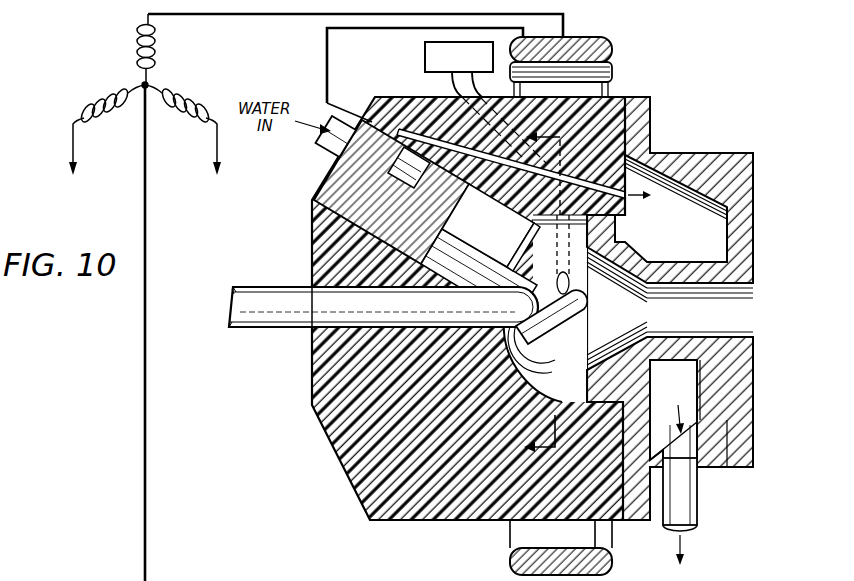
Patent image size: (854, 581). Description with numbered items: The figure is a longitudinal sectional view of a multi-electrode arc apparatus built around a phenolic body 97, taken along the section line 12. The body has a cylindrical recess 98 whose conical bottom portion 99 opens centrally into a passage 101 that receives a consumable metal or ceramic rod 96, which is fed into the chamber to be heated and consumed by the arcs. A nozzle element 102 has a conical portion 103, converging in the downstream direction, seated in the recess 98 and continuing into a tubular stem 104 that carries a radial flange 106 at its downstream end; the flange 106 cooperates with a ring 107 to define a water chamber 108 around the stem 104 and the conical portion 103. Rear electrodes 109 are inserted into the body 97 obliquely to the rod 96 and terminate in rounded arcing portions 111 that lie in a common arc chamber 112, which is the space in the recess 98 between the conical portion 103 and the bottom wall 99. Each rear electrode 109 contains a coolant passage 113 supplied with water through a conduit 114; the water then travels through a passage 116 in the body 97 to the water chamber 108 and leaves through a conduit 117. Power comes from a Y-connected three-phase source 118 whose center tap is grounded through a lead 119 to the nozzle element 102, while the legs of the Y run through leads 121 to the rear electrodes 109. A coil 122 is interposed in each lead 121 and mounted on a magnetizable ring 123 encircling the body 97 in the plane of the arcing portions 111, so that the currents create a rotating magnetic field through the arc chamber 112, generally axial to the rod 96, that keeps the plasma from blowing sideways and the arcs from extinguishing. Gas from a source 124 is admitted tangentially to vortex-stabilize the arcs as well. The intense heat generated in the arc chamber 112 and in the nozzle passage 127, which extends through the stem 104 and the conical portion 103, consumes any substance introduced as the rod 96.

The section line 12- 12 is at (544, 293).
The consumable rod 96 is at (265, 287).
The phenolic body 97 is at (458, 520).
The cylindrical recess 98 is at (623, 387).
The conical bottom portion 99 is at (524, 368).
The passage 101 is at (311, 285).
The nozzle element 102 is at (754, 183).
The conical portion 103 is at (630, 255).
The tubular stem 104 is at (690, 372).
The radial flange 106 is at (750, 368).
The ring 107 is at (688, 160).
The water chamber 108 is at (676, 193).
The rear electrode 109 is at (352, 171).
The arcing portion 111 is at (563, 280).
The common arc chamber 112 is at (548, 238).
The coolant passage 113 is at (479, 252).
The conduit 114 is at (330, 150).
The passage 116 is at (622, 186).
The conduit 117 is at (672, 505).
The three-phase power source 118 is at (126, 70).
The lead 119 is at (143, 383).
The lead 121 is at (273, 15).
The coil 122 is at (617, 68).
The magnetizable ring 123 is at (588, 42).
The gas source 124 is at (425, 57).
The nozzle passage 127 is at (700, 310).